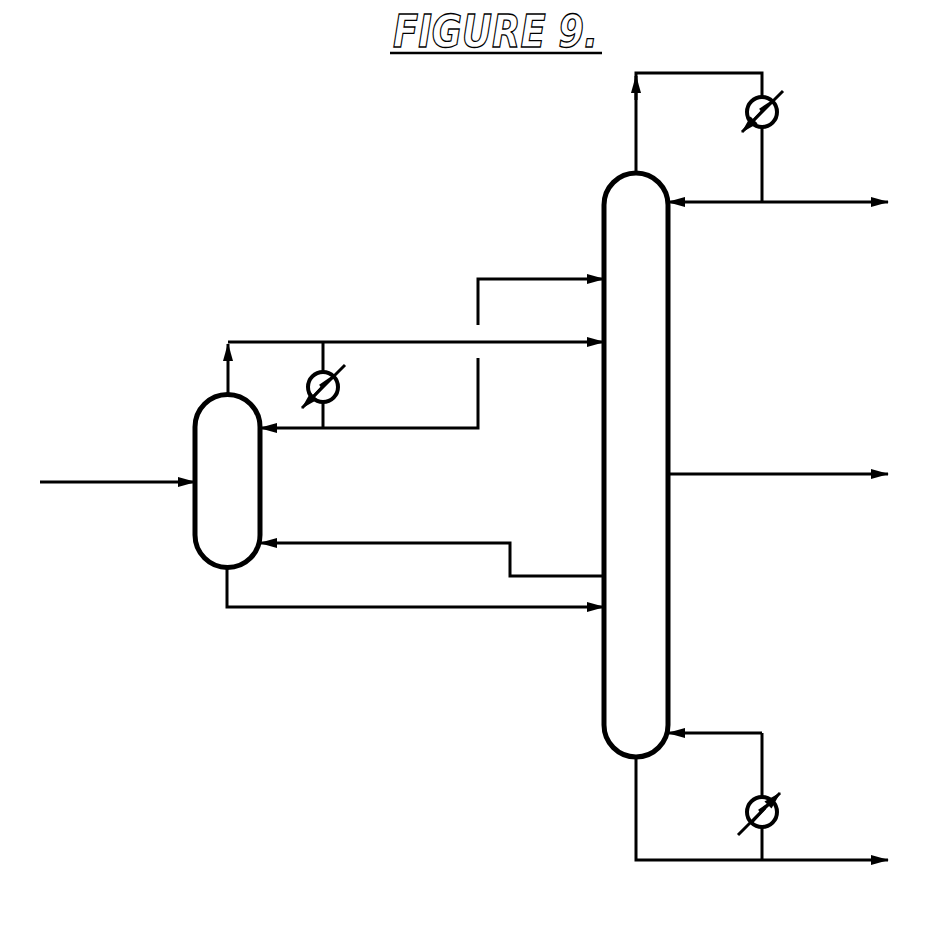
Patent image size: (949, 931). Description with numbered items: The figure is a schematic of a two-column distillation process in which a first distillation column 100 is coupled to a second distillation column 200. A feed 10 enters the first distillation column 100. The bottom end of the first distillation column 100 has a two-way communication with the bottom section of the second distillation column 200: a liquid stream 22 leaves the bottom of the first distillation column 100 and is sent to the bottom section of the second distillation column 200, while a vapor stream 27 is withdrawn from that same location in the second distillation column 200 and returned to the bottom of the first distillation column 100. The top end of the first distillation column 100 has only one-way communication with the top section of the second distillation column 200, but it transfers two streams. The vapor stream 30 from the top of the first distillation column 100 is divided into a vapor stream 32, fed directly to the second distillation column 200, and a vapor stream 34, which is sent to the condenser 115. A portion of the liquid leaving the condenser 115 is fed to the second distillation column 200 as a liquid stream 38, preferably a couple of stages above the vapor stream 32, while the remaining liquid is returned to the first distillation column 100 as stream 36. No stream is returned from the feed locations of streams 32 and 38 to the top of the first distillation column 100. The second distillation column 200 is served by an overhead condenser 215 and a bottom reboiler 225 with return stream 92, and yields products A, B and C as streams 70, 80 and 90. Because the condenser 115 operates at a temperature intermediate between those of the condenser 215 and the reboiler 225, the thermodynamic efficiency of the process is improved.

The feed stream ABC 10 is at (94, 482).
The liquid stream 22 is at (463, 607).
The vapor stream 27 is at (463, 543).
The vapor stream 30 is at (227, 380).
The vapor stream 32 is at (539, 342).
The vapor stream 34 is at (316, 355).
The return stream to separator 36 is at (281, 428).
The liquid stream 38 is at (539, 279).
The overhead product stream A 70 is at (813, 202).
The side draw product stream B 80 is at (766, 474).
The bottoms product stream C 90 is at (814, 860).
The reboiler return stream 92 is at (720, 733).
The first distillation column 100 is at (276, 499).
The condenser 115 is at (350, 400).
The second distillation column 200 is at (668, 607).
The condenser 215 is at (788, 102).
The reboiler 225 is at (792, 810).